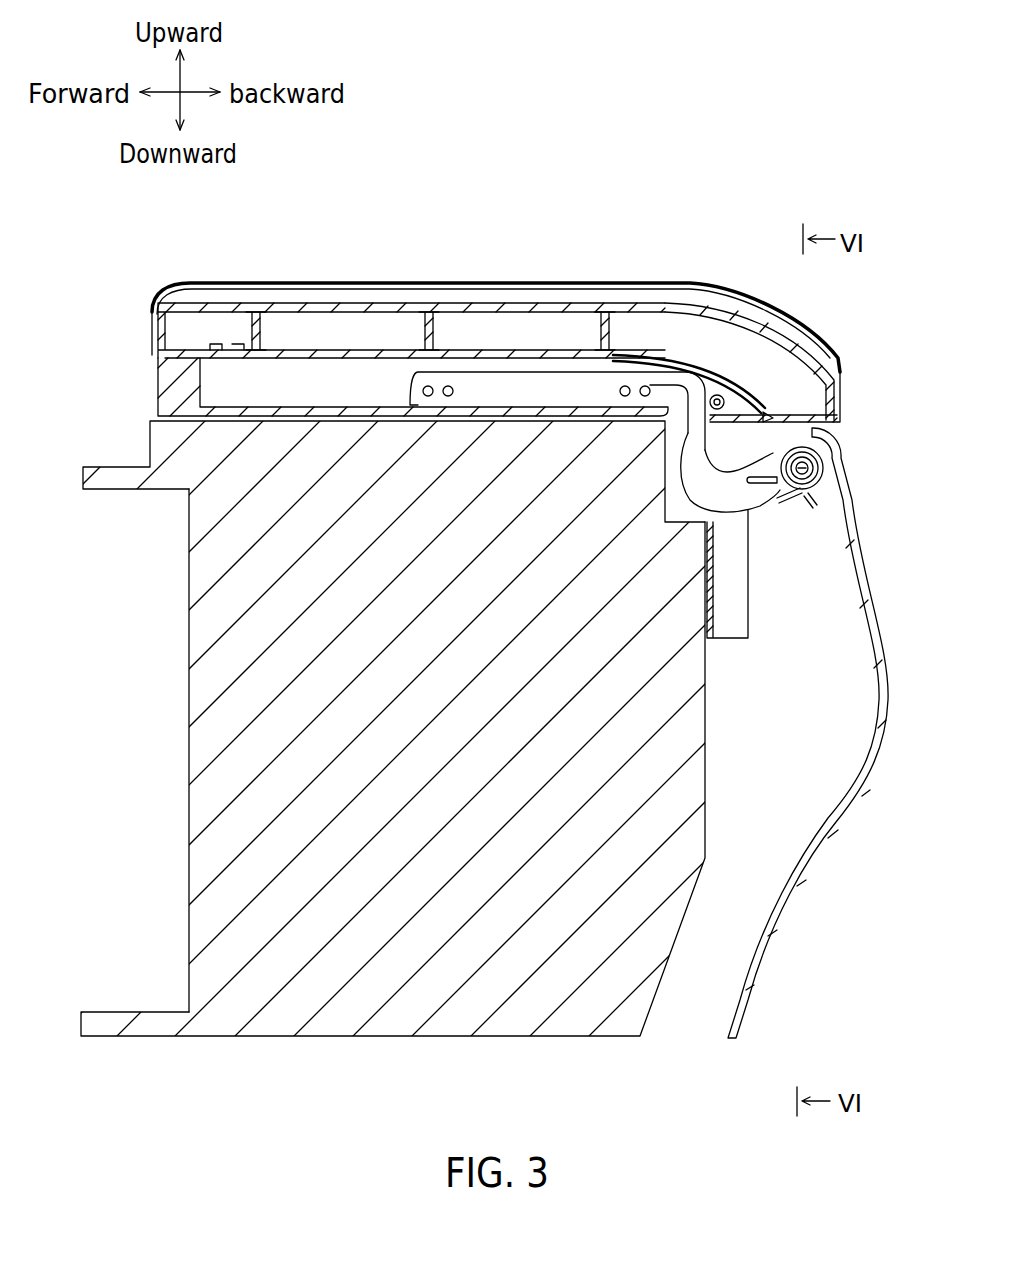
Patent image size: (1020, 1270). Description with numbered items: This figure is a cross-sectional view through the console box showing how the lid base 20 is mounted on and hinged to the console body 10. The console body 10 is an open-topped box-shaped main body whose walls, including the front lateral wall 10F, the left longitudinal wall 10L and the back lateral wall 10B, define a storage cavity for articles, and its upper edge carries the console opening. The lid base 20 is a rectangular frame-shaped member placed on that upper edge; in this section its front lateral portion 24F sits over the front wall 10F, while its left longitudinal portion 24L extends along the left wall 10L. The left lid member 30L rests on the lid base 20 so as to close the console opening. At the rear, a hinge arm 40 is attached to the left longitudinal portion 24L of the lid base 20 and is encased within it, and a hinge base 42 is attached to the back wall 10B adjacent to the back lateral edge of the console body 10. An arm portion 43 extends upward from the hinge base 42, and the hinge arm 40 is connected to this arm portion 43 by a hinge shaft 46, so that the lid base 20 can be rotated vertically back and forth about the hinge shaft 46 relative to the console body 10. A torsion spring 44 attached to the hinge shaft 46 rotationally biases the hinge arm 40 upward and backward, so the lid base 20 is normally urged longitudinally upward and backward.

The console body 10 is at (117, 454).
The front lateral wall 10F is at (189, 635).
The left longitudinal wall 10L is at (430, 920).
The back lateral wall 10B is at (705, 823).
The lid base 20 is at (718, 380).
The front lateral portion 24F is at (176, 382).
The left longitudinal portion 24L is at (300, 410).
The left lid member 30L is at (445, 282).
The hinge arm 40 is at (690, 430).
The hinge base 42 is at (715, 605).
The arm portion 43 is at (770, 425).
The torsion spring 44 is at (812, 492).
The hinge shaft 46 is at (822, 462).